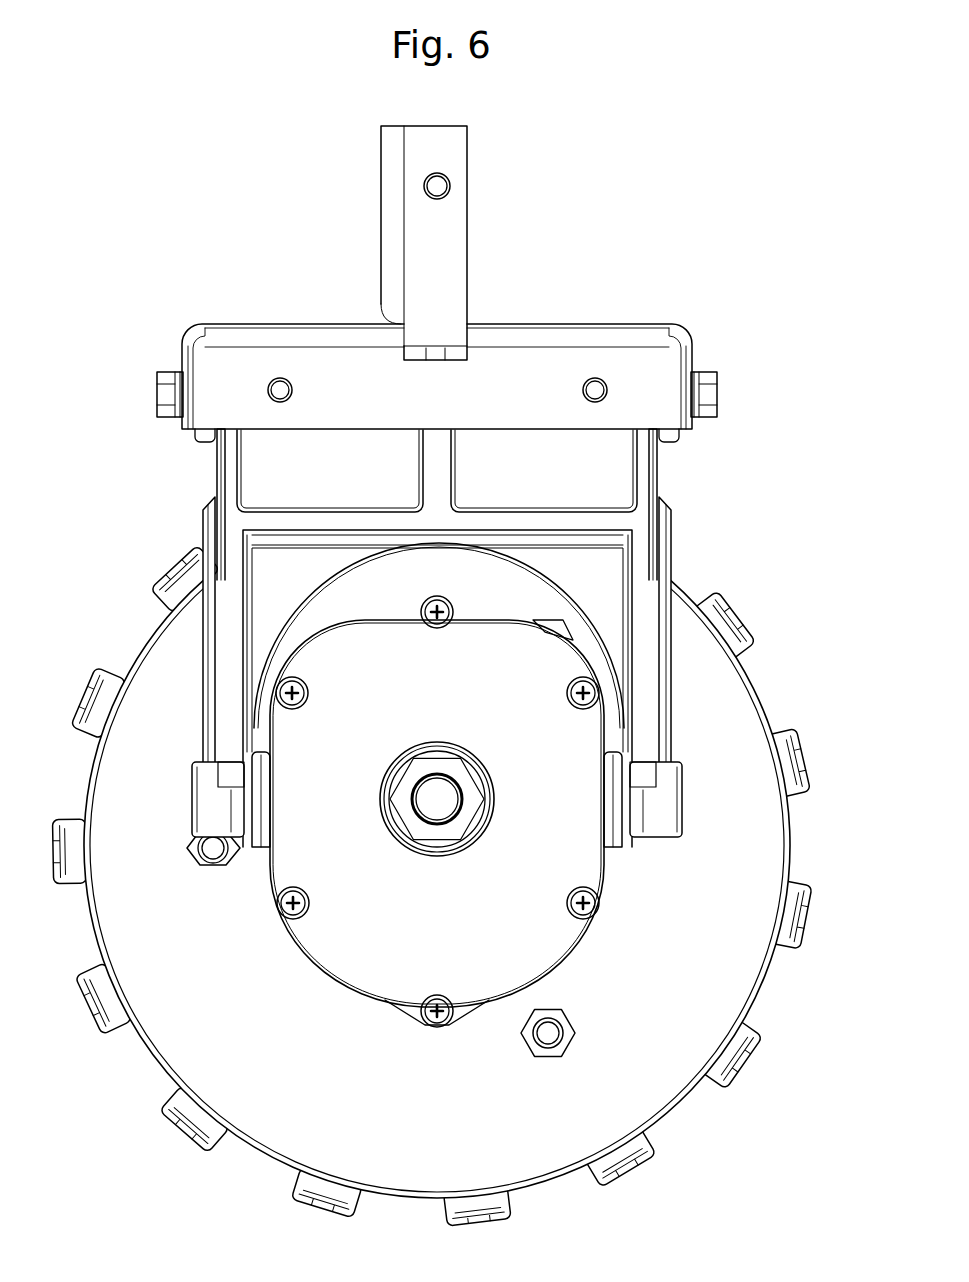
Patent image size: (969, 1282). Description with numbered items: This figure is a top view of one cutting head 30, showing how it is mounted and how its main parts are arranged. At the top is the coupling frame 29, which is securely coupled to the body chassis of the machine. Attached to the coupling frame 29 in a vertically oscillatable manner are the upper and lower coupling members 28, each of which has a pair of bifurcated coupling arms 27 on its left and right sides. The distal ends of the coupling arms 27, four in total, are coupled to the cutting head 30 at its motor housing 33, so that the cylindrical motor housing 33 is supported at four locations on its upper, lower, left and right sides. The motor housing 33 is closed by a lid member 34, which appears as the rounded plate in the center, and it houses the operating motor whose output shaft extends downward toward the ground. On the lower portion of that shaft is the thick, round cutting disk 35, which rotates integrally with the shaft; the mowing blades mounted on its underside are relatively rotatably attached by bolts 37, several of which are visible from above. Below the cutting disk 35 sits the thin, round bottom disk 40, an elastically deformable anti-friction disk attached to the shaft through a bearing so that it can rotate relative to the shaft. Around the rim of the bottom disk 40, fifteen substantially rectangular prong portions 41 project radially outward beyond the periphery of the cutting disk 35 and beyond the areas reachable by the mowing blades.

The coupling arm 27 is at (672, 615).
The coupling member 28 is at (657, 467).
The coupling frame 29 is at (693, 358).
The cutting head 30 is at (818, 563).
The motor housing 33 is at (607, 863).
The lid member 34 is at (557, 733).
The cutting disk 35 is at (707, 960).
The bolt 37 is at (568, 622).
The bottom disk 40 is at (437, 889).
The prong portion 41 is at (180, 1125).